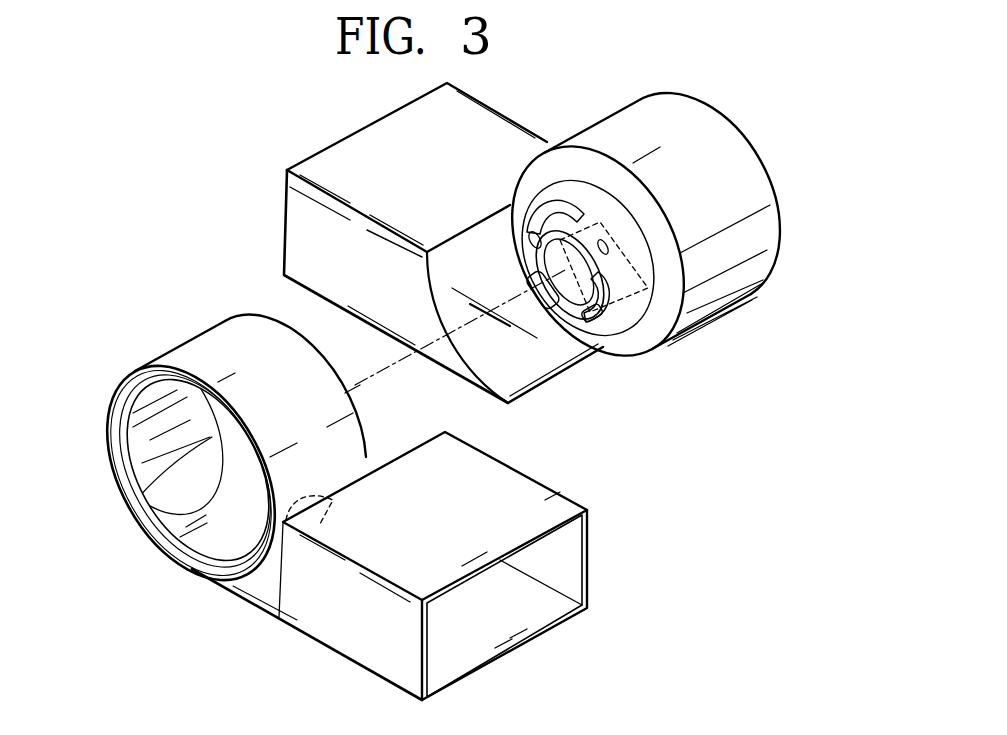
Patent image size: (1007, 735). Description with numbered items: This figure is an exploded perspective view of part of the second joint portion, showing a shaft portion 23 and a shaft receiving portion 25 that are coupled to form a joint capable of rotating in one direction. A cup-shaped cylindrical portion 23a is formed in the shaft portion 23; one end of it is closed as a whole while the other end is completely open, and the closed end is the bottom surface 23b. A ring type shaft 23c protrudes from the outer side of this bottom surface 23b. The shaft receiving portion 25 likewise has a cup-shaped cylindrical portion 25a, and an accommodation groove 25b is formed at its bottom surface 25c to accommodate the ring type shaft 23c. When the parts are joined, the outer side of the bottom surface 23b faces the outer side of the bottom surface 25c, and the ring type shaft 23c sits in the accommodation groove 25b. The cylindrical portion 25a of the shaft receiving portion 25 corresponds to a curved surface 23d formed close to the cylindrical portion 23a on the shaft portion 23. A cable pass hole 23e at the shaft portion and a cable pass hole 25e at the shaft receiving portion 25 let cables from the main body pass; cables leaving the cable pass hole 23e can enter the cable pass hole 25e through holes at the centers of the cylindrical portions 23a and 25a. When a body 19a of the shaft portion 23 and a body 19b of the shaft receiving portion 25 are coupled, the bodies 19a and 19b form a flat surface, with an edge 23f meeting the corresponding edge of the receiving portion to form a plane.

The body 19a is at (352, 140).
The body 19b is at (382, 655).
The shaft portion 23 is at (503, 127).
The cylindrical portion 23a is at (733, 150).
The bottom surface 23b is at (650, 345).
The ring type shaft 23c is at (572, 316).
The curved surface 23d is at (494, 364).
The cable pass hole 23e is at (610, 258).
The edge 23f is at (577, 370).
The shaft receiving portion 25 is at (535, 505).
The cylindrical portion 25a is at (165, 532).
The accommodation groove 25b is at (137, 505).
The bottom surface 25c is at (122, 457).
The cable pass hole 25e is at (279, 617).